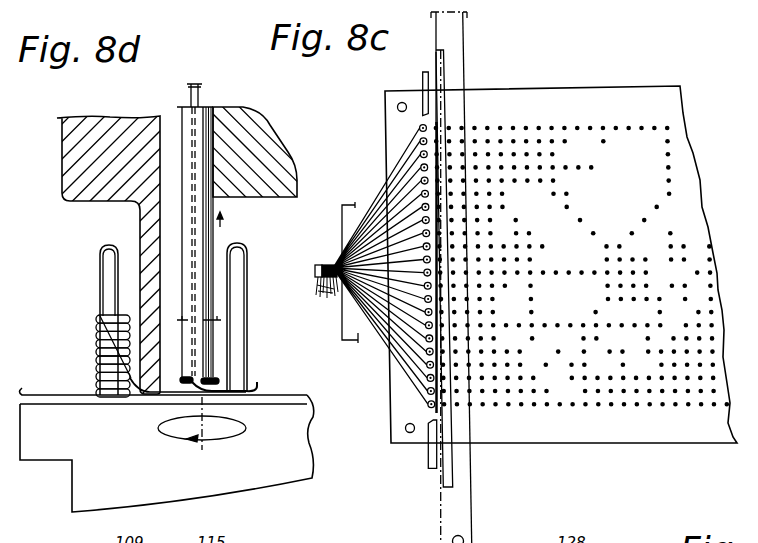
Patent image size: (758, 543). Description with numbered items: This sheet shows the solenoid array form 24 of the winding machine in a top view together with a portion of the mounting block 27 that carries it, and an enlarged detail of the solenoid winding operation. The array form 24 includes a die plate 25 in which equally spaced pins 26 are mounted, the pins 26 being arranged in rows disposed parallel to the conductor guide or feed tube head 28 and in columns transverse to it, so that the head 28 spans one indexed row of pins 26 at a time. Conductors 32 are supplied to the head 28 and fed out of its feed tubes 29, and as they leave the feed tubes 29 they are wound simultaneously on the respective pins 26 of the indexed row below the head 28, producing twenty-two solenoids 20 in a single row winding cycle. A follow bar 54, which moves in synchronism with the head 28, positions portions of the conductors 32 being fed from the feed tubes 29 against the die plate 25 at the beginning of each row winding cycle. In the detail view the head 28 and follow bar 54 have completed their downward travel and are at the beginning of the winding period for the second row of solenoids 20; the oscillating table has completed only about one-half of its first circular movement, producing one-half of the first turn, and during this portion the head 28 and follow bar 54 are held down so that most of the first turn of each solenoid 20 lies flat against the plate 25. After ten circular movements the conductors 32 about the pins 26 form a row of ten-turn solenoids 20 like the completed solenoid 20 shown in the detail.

In FIG. 8d, the solenoid 20 is at (97, 357).
In FIG. 8c, the solenoid 20 is at (419, 131).
In FIG. 8c, the solenoid array form 24 is at (571, 257).
In FIG. 8d, the die plate 25 is at (272, 395).
In FIG. 8c, the die plate 25 is at (626, 443).
In FIG. 8d, the pin 26 is at (100, 282).
In FIG. 8c, the pin 26 is at (451, 128).
In FIG. 8d, the mounting block 27 is at (202, 431).
In FIG. 8d, the conductor guide or feed tube head 28 is at (277, 169).
In FIG. 8c, the conductor guide or feed tube head 28 is at (466, 68).
In FIG. 8d, the feed tube 29 is at (213, 243).
In FIG. 8d, the conductor 32 is at (200, 98).
In FIG. 8d, the follow bar 54 is at (62, 176).
In FIG. 8c, the follow bar 54 is at (421, 80).